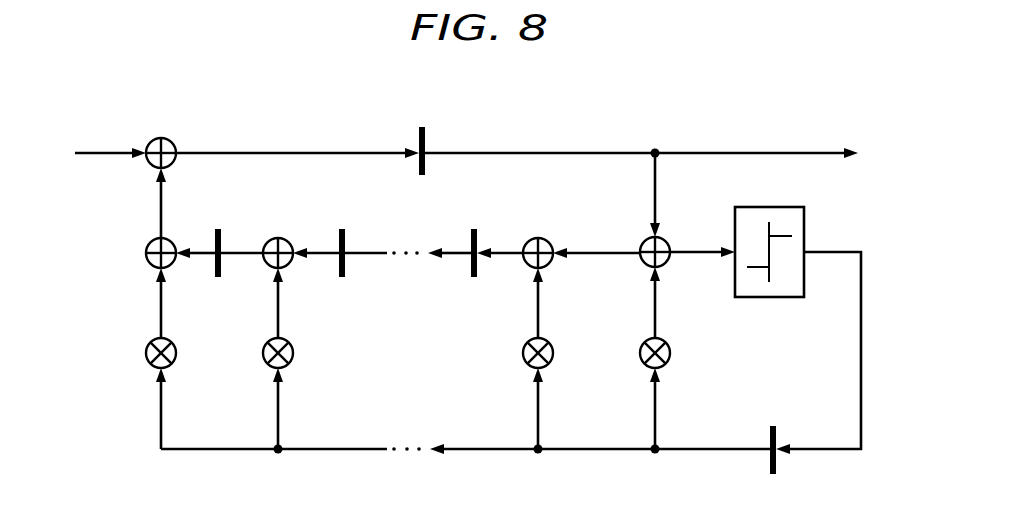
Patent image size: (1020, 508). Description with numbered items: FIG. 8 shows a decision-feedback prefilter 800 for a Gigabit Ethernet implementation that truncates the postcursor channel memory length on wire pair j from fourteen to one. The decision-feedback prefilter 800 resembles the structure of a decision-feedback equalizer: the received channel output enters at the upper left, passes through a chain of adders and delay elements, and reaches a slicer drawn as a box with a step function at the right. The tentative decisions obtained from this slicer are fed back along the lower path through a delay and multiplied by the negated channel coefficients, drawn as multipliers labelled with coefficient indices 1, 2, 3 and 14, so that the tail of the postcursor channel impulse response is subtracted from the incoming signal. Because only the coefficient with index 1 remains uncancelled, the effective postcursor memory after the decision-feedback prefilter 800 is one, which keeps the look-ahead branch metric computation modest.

The decision-feedback prefilter 800 is at (500, 72).
The multiplier for coefficient f1,j 1 is at (628, 353).
The multiplier for coefficient f2,j 2 is at (134, 353).
The multiplier for coefficient f3,j 3 is at (251, 353).
The multiplier for coefficient f14,j 14 is at (511, 353).